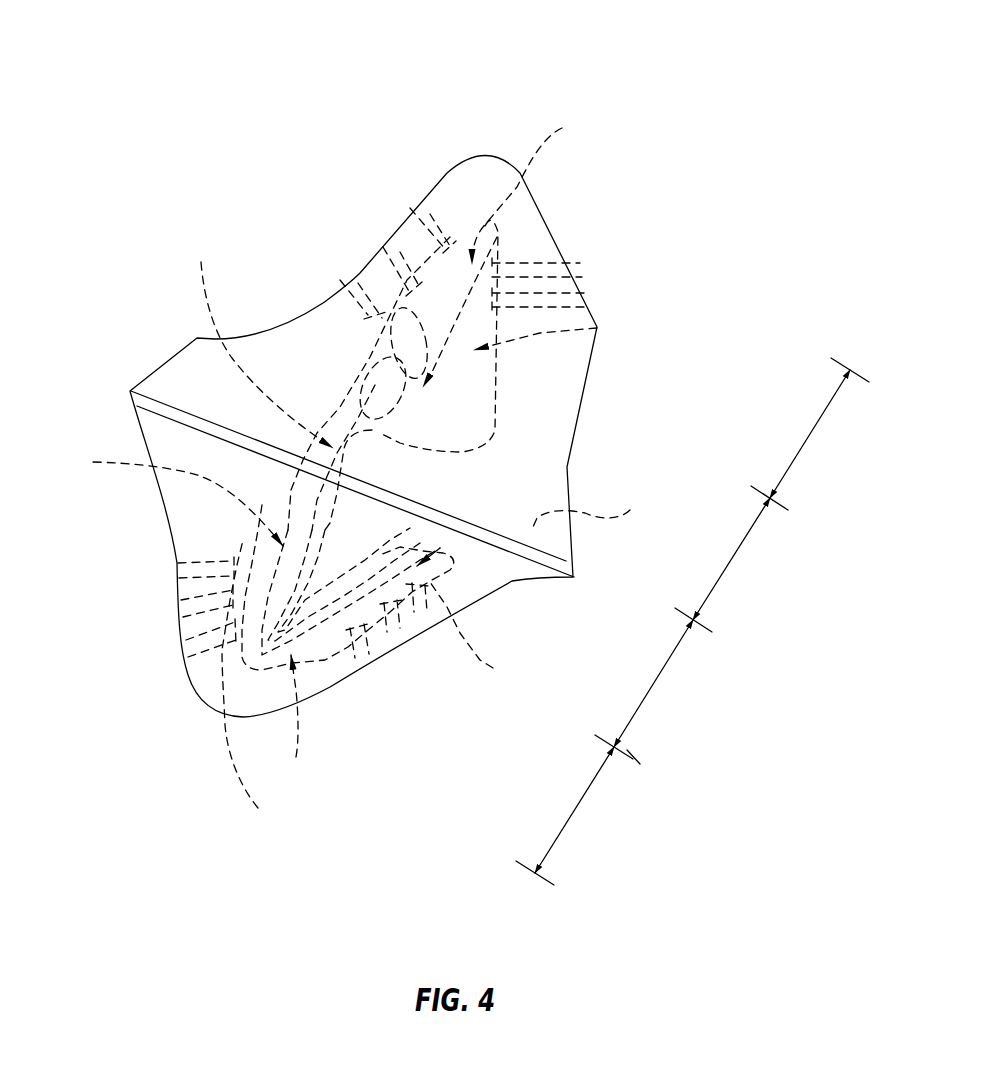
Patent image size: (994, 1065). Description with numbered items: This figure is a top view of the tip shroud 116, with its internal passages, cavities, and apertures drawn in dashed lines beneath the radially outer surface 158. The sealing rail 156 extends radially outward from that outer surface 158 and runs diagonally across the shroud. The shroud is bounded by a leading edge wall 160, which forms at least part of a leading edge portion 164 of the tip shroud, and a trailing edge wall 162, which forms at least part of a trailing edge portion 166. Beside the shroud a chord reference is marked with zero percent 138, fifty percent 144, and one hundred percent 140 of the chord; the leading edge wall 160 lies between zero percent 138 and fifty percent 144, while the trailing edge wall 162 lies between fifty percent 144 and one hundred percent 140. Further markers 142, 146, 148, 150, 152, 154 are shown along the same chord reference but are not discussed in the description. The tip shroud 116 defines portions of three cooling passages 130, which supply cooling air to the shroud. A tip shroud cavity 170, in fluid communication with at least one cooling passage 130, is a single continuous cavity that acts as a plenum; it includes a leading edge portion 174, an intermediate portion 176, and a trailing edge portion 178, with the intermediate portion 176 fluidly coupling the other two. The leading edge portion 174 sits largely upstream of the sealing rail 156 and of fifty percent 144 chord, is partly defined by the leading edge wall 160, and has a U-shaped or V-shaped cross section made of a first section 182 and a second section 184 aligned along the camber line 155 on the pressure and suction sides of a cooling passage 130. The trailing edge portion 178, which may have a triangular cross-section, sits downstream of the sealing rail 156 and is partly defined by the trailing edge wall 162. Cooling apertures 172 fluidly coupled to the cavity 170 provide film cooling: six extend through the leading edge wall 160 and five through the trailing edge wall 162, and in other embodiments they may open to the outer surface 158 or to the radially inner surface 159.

The tip shroud 116 is at (160, 80).
The cooling passages 130 is at (378, 386).
The zero percent of the chord 138 is at (552, 883).
The one hundred percent of the chord 140 is at (849, 358).
The third axial position 142 is at (640, 756).
The fifty percent of the chord 144 is at (713, 633).
The fifth axial position 146 is at (758, 486).
The first axial segment 148 is at (597, 777).
The second axial segment 150 is at (653, 692).
The third axial segment 152 is at (733, 563).
The fourth axial segment 154 is at (808, 442).
The camber line 155 is at (338, 668).
The sealing rail 156 is at (153, 396).
The radially outer surface 158 is at (520, 385).
The radially inner surface 159 is at (592, 501).
The leading edge wall 160 is at (222, 707).
The trailing edge wall 162 is at (545, 228).
The leading edge portion 164 is at (183, 703).
The trailing edge portion 166 is at (479, 116).
The tip shroud cavity 170 is at (598, 327).
The cooling apertures 172 is at (336, 272).
The leading edge portion of the tip shroud cavity 174 is at (299, 723).
The intermediate portion of the tip shroud cavity 176 is at (256, 338).
The trailing edge portion of the tip shroud cavity 178 is at (541, 186).
The first section 182 is at (352, 541).
The second section 184 is at (163, 495).